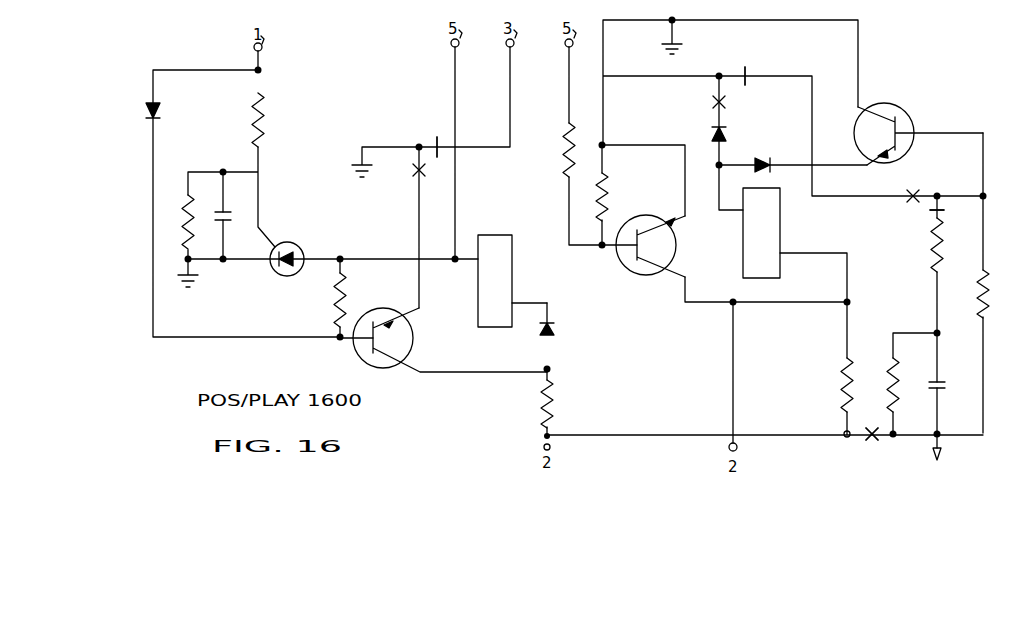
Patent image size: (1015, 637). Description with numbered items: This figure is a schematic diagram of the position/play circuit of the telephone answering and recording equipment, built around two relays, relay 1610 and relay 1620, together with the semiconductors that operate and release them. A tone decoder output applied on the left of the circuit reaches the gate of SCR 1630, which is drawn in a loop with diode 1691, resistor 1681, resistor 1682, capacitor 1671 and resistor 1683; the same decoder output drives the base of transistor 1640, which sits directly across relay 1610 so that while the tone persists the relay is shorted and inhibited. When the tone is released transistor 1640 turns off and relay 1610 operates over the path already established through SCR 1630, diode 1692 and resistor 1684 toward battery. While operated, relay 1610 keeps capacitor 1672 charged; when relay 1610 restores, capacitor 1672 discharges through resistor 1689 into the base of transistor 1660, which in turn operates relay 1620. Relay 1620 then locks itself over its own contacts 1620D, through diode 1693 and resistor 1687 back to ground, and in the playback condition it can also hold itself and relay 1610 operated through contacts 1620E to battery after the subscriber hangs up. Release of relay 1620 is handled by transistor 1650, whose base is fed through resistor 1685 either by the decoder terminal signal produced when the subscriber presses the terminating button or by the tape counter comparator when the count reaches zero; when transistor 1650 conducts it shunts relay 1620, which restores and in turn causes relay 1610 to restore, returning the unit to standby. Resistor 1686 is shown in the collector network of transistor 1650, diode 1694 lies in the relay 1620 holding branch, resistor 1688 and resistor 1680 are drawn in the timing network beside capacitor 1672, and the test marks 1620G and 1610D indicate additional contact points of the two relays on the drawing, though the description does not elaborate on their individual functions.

The diode 1691 is at (160, 106).
The resistor 1681 is at (265, 119).
The resistor 1682 is at (176, 198).
The capacitor 1671 is at (232, 213).
The SCR 1630 is at (292, 242).
The resistor 1683 is at (335, 304).
The transistor 1640 is at (353, 351).
The test point 1620G is at (432, 148).
The resistor 1685 is at (563, 150).
The relay 1610 is at (478, 314).
The diode 1692 is at (553, 332).
The resistor 1684 is at (554, 408).
The resistor 1686 is at (605, 187).
The transistor 1650 is at (617, 268).
The relay 1620 is at (743, 250).
The diode 1693 is at (710, 133).
The diode 1694 is at (757, 157).
The relay contacts 1620D is at (740, 81).
The transistor 1660 is at (900, 114).
The test point 1610D is at (930, 208).
The resistor 1689 is at (935, 247).
The resistor 1688 is at (890, 364).
The resistor 1687 is at (842, 392).
The resistor 1680 is at (982, 306).
The capacitor 1672 is at (950, 386).
The relay contacts 1620E is at (872, 440).